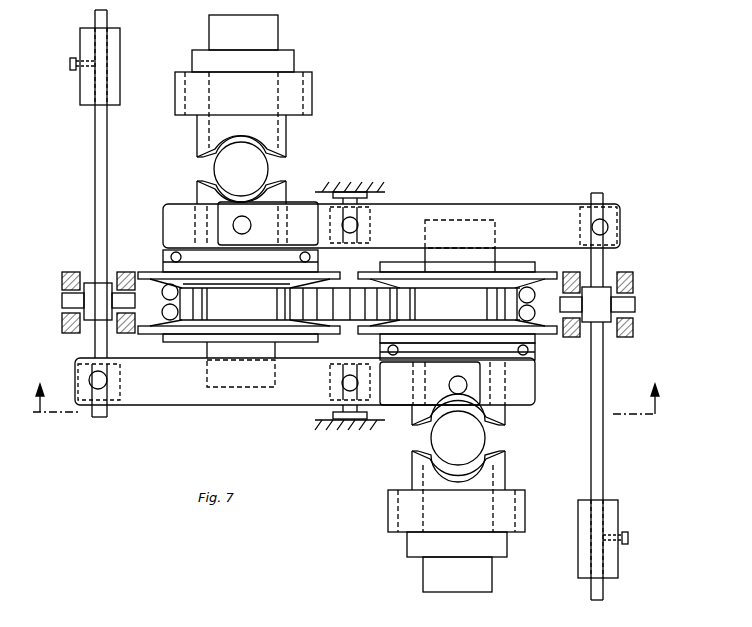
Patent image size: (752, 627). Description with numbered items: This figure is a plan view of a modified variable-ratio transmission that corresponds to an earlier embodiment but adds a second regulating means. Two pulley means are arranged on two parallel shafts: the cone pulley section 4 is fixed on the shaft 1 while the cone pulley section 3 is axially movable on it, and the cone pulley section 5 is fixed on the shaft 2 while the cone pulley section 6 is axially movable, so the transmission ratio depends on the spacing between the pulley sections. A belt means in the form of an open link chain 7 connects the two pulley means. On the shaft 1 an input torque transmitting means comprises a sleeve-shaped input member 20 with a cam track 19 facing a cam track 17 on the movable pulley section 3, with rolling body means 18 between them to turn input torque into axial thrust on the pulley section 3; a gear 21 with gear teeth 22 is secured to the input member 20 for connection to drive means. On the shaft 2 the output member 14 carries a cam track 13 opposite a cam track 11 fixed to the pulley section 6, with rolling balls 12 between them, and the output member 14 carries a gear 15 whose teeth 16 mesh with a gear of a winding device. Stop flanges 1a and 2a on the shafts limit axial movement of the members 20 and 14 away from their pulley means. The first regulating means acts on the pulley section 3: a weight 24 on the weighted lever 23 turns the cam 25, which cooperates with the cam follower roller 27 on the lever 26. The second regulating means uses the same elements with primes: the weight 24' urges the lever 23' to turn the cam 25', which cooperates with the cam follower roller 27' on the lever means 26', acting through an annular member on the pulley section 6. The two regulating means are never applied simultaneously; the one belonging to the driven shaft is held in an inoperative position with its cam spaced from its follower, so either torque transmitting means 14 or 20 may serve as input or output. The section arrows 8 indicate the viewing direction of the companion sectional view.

The shaft 1 is at (482, 580).
The stop flange 1a is at (495, 548).
The shaft 2 is at (283, 32).
The stop flange 2a is at (280, 54).
The cone pulley section 3 is at (548, 336).
The cone pulley section 4 is at (548, 281).
The cone pulley section 5 is at (152, 331).
The cone pulley section 6 is at (162, 273).
The open link chain 7 is at (325, 308).
The section direction arrows 8 is at (345, 402).
The cam track 11 is at (282, 190).
The rolling balls 12 is at (258, 172).
The cam track 13 is at (285, 154).
The output member 14 is at (286, 128).
The gear 15 is at (298, 85).
The gear teeth 16 is at (305, 103).
The cam track 17 is at (495, 422).
The rolling body means 18 is at (470, 440).
The cam track 19 is at (500, 452).
The input member 20 is at (500, 475).
The gear 21 is at (505, 498).
The gear teeth 22 is at (520, 518).
The weighted lever 23 is at (125, 184).
The lever 23' is at (626, 461).
The weight 24 is at (113, 66).
The weight 24' is at (620, 539).
The cam 25 is at (91, 312).
The cam 25' is at (610, 288).
The lever 26 is at (305, 408).
The lever means 26' is at (391, 211).
The cam follower roller 27 is at (96, 412).
The cam follower roller 27' is at (597, 220).